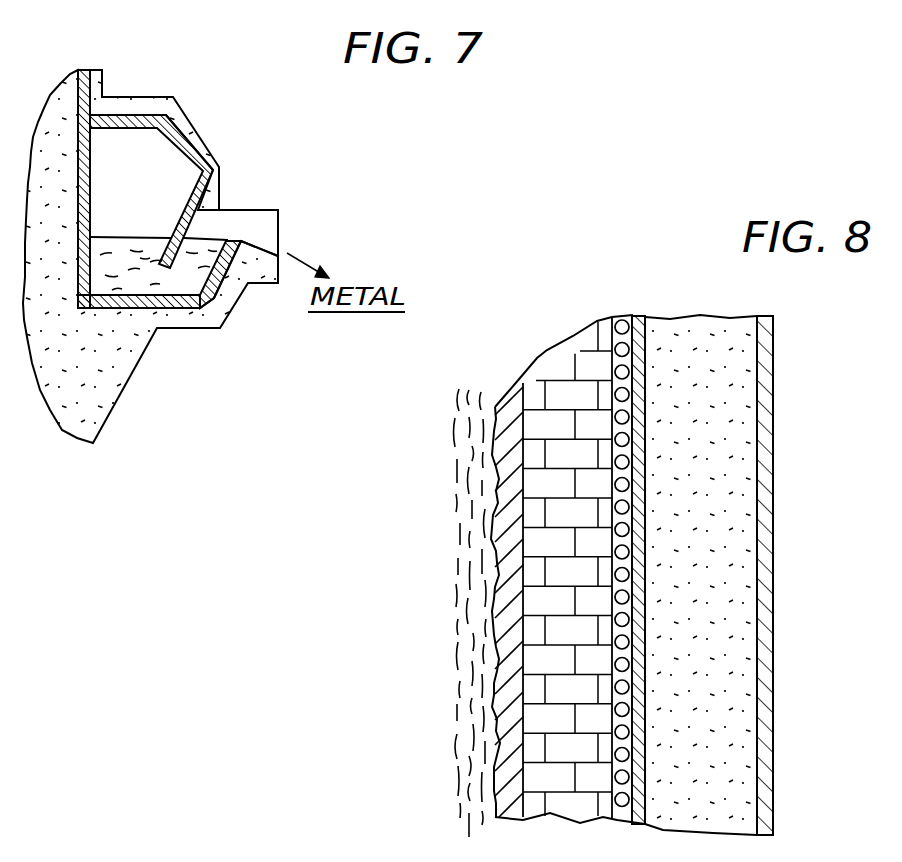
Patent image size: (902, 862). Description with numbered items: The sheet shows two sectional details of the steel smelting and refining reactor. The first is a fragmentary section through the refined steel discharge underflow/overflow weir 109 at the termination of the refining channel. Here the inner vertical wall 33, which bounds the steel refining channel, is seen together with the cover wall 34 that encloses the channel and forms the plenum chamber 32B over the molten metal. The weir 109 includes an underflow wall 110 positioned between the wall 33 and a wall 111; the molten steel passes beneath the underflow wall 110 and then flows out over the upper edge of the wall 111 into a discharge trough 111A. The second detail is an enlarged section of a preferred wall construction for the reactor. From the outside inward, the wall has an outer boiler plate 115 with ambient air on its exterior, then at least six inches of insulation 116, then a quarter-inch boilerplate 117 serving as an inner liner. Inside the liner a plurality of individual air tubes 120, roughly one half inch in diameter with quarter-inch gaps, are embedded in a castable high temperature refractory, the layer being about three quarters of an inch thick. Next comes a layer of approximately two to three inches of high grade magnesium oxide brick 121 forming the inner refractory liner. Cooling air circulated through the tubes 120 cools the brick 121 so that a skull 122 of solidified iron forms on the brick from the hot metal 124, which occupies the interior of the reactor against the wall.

In FIG. 7, the inner vertical wall 33 is at (78, 158).
In FIG. 7, the plenum chamber 32B is at (118, 164).
In FIG. 7, the cover wall 34 is at (148, 103).
In FIG. 7, the refined steel discharge underflow/overflow weir 109 is at (228, 190).
In FIG. 7, the underflow wall 110 is at (177, 258).
In FIG. 7, the wall 111 is at (233, 273).
In FIG. 7, the discharge trough 111A is at (264, 256).
In FIG. 8, the outer boiler plate 115 is at (763, 478).
In FIG. 8, the insulation 116 is at (715, 323).
In FIG. 8, the inner liner boilerplate 117 is at (637, 316).
In FIG. 8, the air tubes 120 is at (612, 348).
In FIG. 8, the magnesium oxide brick 121 is at (550, 368).
In FIG. 8, the skull 122 is at (503, 490).
In FIG. 8, the hot metal 124 is at (473, 567).